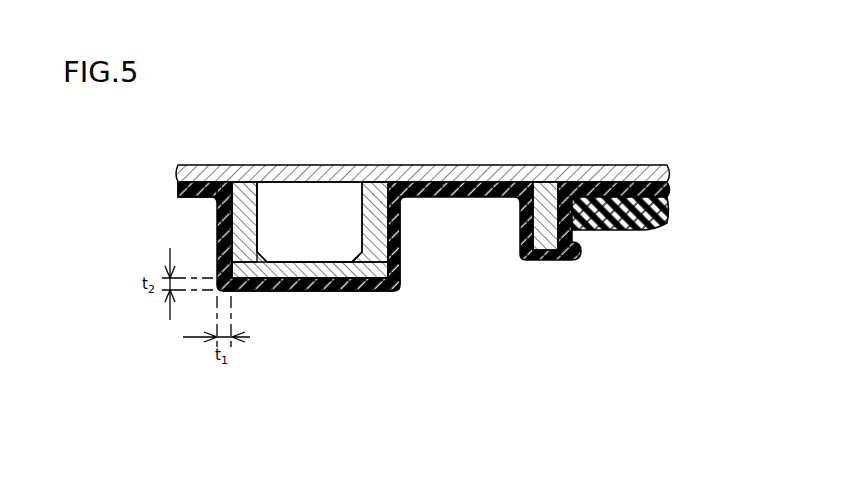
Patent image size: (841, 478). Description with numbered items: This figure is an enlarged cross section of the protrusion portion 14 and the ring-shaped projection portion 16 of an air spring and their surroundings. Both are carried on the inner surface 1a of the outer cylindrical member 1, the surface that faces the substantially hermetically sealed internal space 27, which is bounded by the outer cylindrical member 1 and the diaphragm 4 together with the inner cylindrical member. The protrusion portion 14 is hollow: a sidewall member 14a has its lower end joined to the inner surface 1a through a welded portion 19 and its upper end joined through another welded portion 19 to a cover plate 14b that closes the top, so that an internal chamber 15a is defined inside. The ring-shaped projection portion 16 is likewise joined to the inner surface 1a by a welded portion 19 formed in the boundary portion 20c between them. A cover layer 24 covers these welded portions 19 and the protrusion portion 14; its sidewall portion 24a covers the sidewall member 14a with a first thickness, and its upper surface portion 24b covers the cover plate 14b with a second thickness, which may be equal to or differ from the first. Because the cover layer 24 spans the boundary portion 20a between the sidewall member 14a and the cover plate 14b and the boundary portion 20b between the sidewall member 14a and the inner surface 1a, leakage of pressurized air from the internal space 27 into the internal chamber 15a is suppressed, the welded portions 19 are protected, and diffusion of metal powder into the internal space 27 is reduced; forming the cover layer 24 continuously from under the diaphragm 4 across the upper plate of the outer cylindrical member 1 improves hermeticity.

The outer cylindrical member 1 is at (442, 175).
The inner surface 1a is at (480, 185).
The diaphragm 4 is at (635, 220).
The protrusion portion 14 is at (150, 122).
The sidewall member 14a is at (240, 227).
The cover plate 14b is at (293, 265).
The internal chamber 15a is at (310, 205).
The ring-shaped projection portion 16 is at (547, 198).
The welded portion 19 is at (357, 262).
The boundary portion 20a is at (377, 265).
The boundary portion 20b is at (373, 185).
The boundary portion 20c is at (552, 180).
The cover layer 24 is at (458, 197).
The sidewall portion 24a is at (400, 244).
The upper surface portion 24b is at (317, 286).
The internal space 27 is at (573, 323).